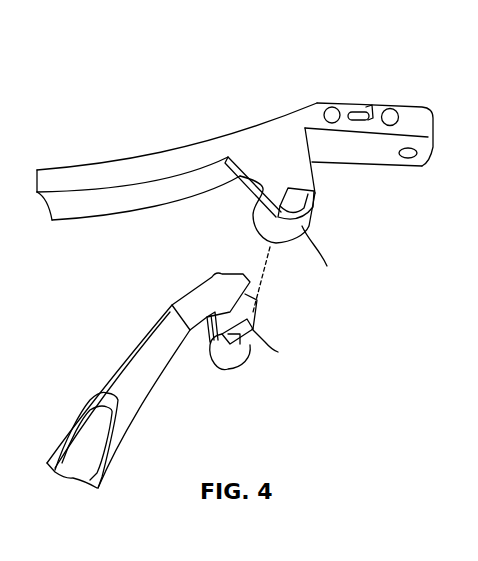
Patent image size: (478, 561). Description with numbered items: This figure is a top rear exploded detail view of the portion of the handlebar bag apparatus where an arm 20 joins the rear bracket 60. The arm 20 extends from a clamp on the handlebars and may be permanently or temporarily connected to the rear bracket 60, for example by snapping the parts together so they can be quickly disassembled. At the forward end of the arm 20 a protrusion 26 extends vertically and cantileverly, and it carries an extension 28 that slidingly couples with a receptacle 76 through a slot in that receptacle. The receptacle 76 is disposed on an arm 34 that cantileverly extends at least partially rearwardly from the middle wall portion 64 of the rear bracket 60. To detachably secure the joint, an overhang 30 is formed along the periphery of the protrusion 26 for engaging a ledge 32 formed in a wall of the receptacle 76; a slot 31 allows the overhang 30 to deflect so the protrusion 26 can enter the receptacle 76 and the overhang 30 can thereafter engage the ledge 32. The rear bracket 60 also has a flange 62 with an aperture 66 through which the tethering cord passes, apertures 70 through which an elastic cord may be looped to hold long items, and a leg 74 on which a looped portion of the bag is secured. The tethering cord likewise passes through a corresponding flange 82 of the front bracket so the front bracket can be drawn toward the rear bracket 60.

The arm 20 is at (143, 397).
The protrusion 26 is at (233, 357).
The extension 28 is at (227, 307).
The overhang 30 is at (258, 340).
The slot 31 is at (220, 364).
The ledge 32 is at (310, 215).
The arm 34 is at (291, 176).
The rear bracket 60 is at (167, 150).
The flange 62 is at (362, 167).
The middle wall portion 64 is at (63, 168).
The aperture 66 is at (413, 170).
The aperture 70 is at (330, 100).
The leg 74 is at (369, 108).
The receptacle 76 is at (303, 238).
The flange 82 is at (359, 108).